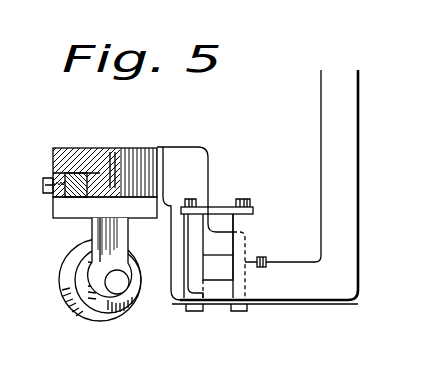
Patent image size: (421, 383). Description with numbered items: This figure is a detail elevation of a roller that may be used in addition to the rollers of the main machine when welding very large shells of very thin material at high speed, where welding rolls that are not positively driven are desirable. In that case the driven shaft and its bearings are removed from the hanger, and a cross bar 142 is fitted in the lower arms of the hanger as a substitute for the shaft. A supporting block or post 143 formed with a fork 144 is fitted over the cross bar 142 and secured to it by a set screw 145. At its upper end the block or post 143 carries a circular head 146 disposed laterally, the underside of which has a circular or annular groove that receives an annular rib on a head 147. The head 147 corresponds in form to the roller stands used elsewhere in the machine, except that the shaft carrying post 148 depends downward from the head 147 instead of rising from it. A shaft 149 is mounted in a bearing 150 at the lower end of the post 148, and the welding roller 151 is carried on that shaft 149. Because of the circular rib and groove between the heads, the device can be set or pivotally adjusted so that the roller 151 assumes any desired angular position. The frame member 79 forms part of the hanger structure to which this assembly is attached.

The frame member 79 is at (345, 183).
The cross bar 142 is at (220, 270).
The supporting block or post 143 is at (200, 176).
The fork 144 is at (217, 245).
The set screw 145 is at (264, 262).
The circular head 146 is at (95, 155).
The head 147 is at (68, 207).
The shaft carrying post 148 is at (118, 236).
The shaft 149 is at (117, 282).
The bearing 150 is at (90, 293).
The welding roller 151 is at (65, 290).